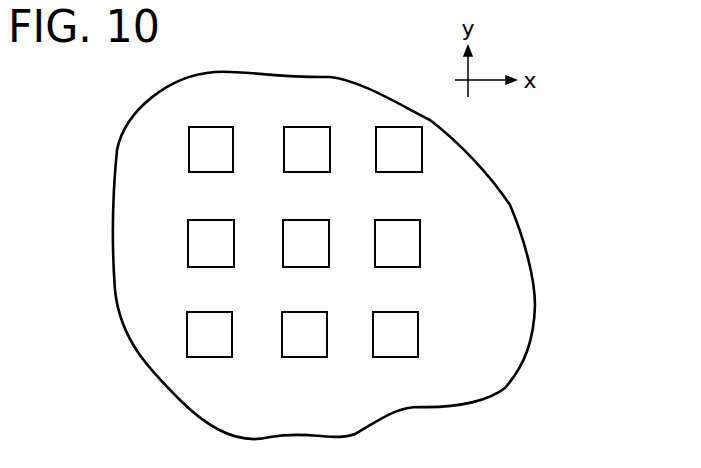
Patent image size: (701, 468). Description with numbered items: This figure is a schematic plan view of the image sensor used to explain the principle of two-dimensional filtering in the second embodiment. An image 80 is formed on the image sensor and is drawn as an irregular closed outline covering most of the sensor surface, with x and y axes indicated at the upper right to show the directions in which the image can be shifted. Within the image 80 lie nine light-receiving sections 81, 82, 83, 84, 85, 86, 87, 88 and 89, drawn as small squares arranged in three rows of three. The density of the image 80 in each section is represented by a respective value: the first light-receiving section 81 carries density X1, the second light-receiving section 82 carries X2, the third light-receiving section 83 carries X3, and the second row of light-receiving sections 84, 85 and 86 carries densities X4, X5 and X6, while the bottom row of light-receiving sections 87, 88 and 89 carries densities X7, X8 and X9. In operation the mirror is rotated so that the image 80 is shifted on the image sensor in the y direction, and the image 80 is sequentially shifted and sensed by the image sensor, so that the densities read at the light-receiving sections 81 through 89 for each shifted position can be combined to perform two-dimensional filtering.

The image 80 is at (521, 306).
The light-receiving section 81 is at (213, 127).
The light-receiving section 82 is at (306, 127).
The light-receiving section 83 is at (392, 127).
The light-receiving section 84 is at (205, 220).
The light-receiving section 85 is at (300, 220).
The light-receiving section 86 is at (383, 220).
The light-receiving section 87 is at (199, 312).
The light-receiving section 88 is at (298, 312).
The light-receiving section 89 is at (390, 312).